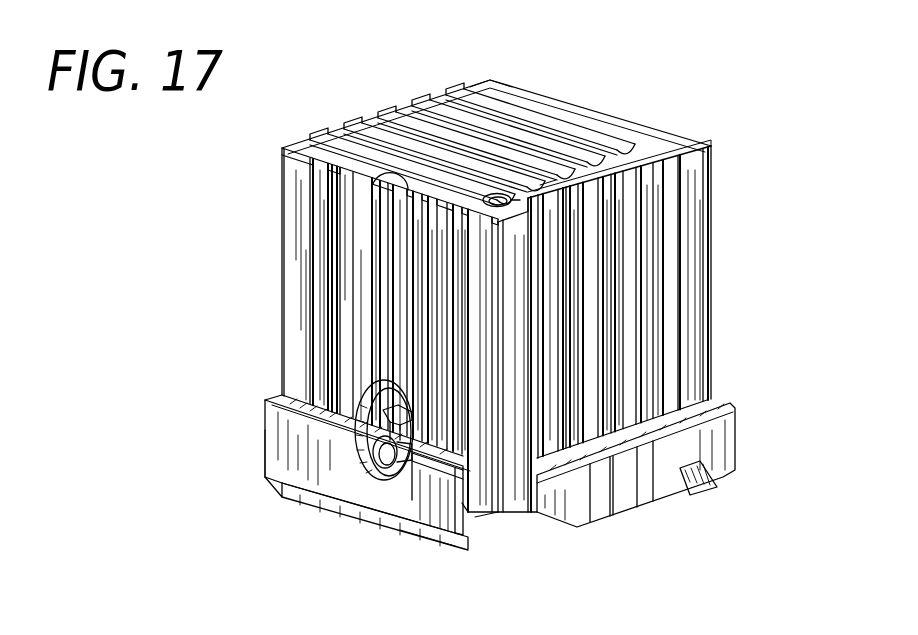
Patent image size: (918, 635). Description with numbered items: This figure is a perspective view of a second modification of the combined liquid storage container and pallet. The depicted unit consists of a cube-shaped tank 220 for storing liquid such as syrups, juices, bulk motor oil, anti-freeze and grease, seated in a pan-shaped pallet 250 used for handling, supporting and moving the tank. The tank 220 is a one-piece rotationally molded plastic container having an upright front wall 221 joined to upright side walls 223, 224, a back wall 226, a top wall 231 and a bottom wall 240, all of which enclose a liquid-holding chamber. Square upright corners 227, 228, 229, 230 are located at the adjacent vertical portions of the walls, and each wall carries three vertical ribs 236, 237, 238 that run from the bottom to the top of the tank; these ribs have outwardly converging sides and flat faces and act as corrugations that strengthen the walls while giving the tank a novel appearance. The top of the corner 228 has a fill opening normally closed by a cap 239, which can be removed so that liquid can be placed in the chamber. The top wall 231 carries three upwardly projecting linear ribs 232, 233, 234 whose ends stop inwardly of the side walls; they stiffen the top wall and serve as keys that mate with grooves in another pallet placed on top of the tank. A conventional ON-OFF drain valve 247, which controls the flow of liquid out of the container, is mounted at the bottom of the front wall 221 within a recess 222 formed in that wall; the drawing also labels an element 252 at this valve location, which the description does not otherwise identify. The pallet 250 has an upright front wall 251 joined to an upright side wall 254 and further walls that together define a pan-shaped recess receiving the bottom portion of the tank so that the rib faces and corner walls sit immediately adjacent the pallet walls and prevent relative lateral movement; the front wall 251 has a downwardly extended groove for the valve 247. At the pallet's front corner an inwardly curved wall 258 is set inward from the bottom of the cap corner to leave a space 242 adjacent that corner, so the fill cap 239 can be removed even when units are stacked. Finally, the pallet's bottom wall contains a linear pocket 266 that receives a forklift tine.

The tank 220 is at (720, 133).
The front wall 221 is at (330, 290).
The recess 222 is at (355, 440).
The side wall 223 is at (362, 146).
The side wall 224 is at (652, 388).
The back wall 226 is at (601, 115).
The corner 227 is at (303, 200).
The corner 228 is at (525, 445).
The corner 229 is at (695, 268).
The corner 230 is at (480, 97).
The top wall 231 is at (545, 120).
The linear rib 232 is at (352, 128).
The linear rib 233 is at (418, 115).
The linear rib 234 is at (440, 108).
The vertical rib 236 is at (347, 387).
The vertical rib 237 is at (333, 160).
The vertical rib 238 is at (430, 480).
The cap 239 is at (598, 140).
The bottom wall 240 is at (507, 520).
The space 242 is at (481, 515).
The drain valve 247 is at (380, 425).
The pallet 250 is at (264, 440).
The front wall 251 is at (281, 464).
The ring boss 252 is at (405, 465).
The side wall 254 is at (723, 425).
The inwardly curved wall 258 is at (441, 490).
The pocket 266 is at (690, 492).